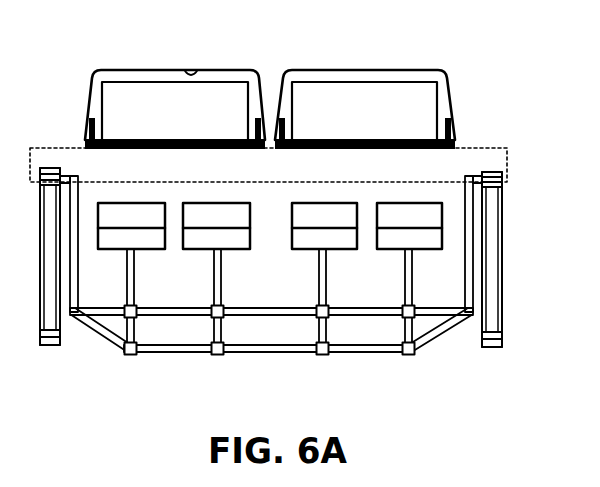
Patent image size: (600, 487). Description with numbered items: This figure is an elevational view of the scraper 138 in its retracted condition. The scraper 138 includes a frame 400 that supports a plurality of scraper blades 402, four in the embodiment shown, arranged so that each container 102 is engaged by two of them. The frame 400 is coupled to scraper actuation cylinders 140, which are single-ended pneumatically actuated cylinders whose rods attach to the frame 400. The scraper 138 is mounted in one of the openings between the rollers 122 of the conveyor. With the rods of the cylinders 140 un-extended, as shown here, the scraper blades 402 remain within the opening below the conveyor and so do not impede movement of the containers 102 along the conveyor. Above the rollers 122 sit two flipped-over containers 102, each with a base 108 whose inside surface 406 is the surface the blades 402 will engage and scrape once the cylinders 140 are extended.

The container 102 is at (91, 106).
The base 108 is at (168, 70).
The inside surface 406 is at (199, 70).
The rollers 122 is at (507, 166).
The scraper 138 is at (554, 224).
The scraper actuation cylinder 140 is at (492, 308).
The frame 400 is at (360, 353).
The scraper blades 402 is at (98, 223).